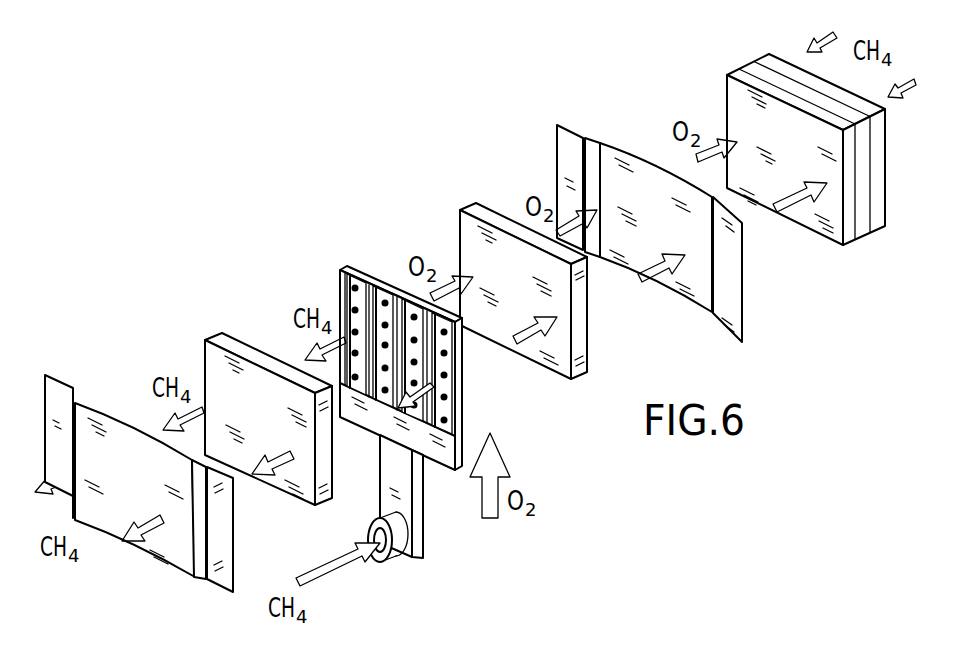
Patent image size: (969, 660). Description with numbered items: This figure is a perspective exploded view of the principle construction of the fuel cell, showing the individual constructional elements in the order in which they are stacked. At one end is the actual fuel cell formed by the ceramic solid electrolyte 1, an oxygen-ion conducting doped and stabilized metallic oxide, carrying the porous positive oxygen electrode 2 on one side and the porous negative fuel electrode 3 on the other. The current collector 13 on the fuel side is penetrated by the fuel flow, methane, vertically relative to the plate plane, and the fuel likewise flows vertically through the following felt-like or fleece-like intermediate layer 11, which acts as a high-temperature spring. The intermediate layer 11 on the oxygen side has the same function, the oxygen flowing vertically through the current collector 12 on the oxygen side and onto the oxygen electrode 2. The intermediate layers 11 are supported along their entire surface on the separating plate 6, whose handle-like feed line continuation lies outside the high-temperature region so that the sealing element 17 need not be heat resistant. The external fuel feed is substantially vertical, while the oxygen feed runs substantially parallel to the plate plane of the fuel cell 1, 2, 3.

The ceramic solid electrolyte 1 is at (865, 235).
The oxygen electrode 2 is at (850, 243).
The fuel electrode 3 is at (880, 230).
The separating plate 6 is at (358, 272).
The intermediate layer 11 is at (483, 210).
The current collector on the oxygen side 12 is at (617, 150).
The current collector on the fuel side 13 is at (102, 423).
The sealing element 17 is at (412, 540).